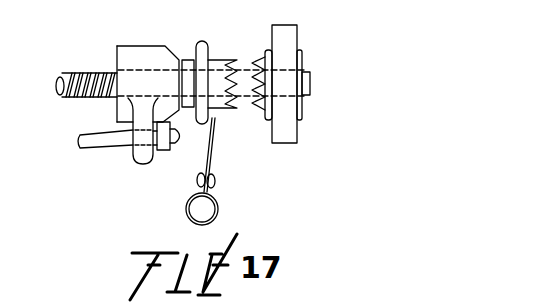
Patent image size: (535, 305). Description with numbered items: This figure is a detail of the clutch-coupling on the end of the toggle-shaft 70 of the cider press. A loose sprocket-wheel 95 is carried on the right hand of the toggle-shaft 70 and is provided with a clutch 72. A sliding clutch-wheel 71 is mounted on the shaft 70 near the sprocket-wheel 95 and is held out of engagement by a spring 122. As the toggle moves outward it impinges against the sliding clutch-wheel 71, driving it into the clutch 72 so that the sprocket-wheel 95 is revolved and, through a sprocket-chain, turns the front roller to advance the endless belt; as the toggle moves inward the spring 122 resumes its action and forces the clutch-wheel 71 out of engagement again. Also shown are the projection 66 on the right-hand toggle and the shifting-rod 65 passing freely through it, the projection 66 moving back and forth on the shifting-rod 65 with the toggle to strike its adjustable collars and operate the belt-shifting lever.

The shifting-rod 65 is at (103, 140).
The projection 66 is at (142, 152).
The toggle-shaft 70 is at (67, 97).
The sliding clutch-wheel 71 is at (217, 63).
The clutch 72 is at (263, 102).
The loose sprocket-wheel 95 is at (283, 45).
The spring 122 is at (208, 160).